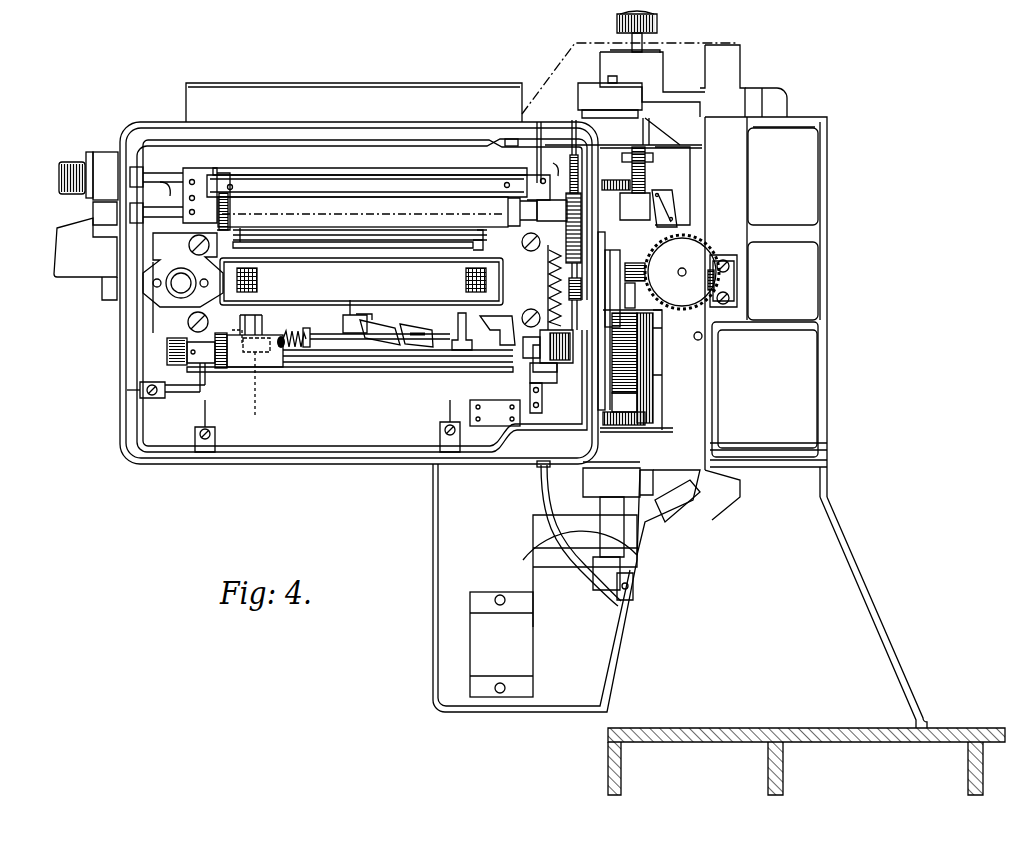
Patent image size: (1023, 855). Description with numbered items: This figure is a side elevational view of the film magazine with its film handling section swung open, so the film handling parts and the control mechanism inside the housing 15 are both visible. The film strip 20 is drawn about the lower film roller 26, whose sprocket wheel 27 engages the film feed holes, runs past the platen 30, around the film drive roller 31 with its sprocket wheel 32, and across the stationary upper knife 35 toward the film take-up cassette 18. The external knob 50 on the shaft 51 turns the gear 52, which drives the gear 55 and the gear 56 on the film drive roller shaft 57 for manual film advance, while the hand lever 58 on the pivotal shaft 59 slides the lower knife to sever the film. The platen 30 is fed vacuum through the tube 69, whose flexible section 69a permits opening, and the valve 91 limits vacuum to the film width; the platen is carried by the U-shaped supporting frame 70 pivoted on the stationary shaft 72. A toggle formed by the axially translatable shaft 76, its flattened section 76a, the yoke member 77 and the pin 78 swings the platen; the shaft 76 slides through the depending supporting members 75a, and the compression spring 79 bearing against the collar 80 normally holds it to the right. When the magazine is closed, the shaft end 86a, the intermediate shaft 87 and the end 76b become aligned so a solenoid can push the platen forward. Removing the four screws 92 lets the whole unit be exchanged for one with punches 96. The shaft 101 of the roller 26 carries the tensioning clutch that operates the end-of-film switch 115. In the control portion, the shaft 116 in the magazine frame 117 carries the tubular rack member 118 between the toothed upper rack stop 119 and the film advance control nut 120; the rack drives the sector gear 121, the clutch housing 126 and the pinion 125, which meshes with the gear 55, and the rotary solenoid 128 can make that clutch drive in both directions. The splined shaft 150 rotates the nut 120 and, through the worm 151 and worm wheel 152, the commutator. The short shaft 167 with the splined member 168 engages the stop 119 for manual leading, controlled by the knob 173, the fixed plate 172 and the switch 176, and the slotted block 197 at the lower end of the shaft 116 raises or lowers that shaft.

The housing 15 is at (560, 58).
The film take-up cassette 18 is at (350, 96).
The film strip 20 is at (368, 211).
The lower film roller 26 is at (278, 372).
The sprocket wheel 27 is at (236, 368).
The platen 30 is at (400, 262).
The film drive roller 31 is at (300, 190).
The sprocket wheel 32 is at (233, 210).
The upper knife 35 is at (450, 178).
The external knob 50 is at (72, 172).
The shaft 51 is at (158, 176).
The gear 52 is at (573, 158).
The gear 55 is at (580, 248).
The gear 56 is at (552, 210).
The film drive roller shaft 57 is at (510, 210).
The hand lever 58 is at (66, 254).
The pivotal shaft 59 is at (160, 216).
The tube 69 is at (320, 446).
The flexible section 69a is at (540, 485).
The U-shaped supporting frame 70 is at (240, 262).
The stationary shaft 72 is at (328, 233).
The depending supporting members 75a is at (462, 352).
The axially translatable shaft 76 is at (338, 334).
The flattened section 76a is at (428, 364).
The shaft end 76b is at (445, 330).
The yoke member 77 is at (392, 356).
The pin 78 is at (410, 326).
The compression spring 79 is at (286, 336).
The collar 80 is at (308, 328).
The shaft end 86a is at (703, 338).
The intermediate shaft 87 is at (669, 330).
The valve 91 is at (160, 278).
The screws 92 is at (187, 246).
The punches 96 is at (245, 267).
The shaft 101 is at (562, 304).
The switch 115 is at (546, 395).
The shaft 116 is at (608, 242).
The magazine frame 117 is at (590, 88).
The tubular rack member 118 is at (634, 362).
The upper rack stop 119 is at (611, 178).
The film advance control nut 120 is at (615, 405).
The sector gear 121 is at (640, 298).
The pinion 125 is at (548, 292).
The clutch housing 126 is at (546, 280).
The rotary solenoid 128 is at (592, 384).
The splined shaft 150 is at (647, 408).
The worm 151 is at (643, 265).
The worm wheel 152 is at (700, 252).
The short shaft 167 is at (655, 52).
The splined member 168 is at (646, 165).
The fixed plate 172 is at (620, 52).
The knob 173 is at (660, 24).
The switch 176 is at (680, 198).
The slotted block 197 is at (603, 575).